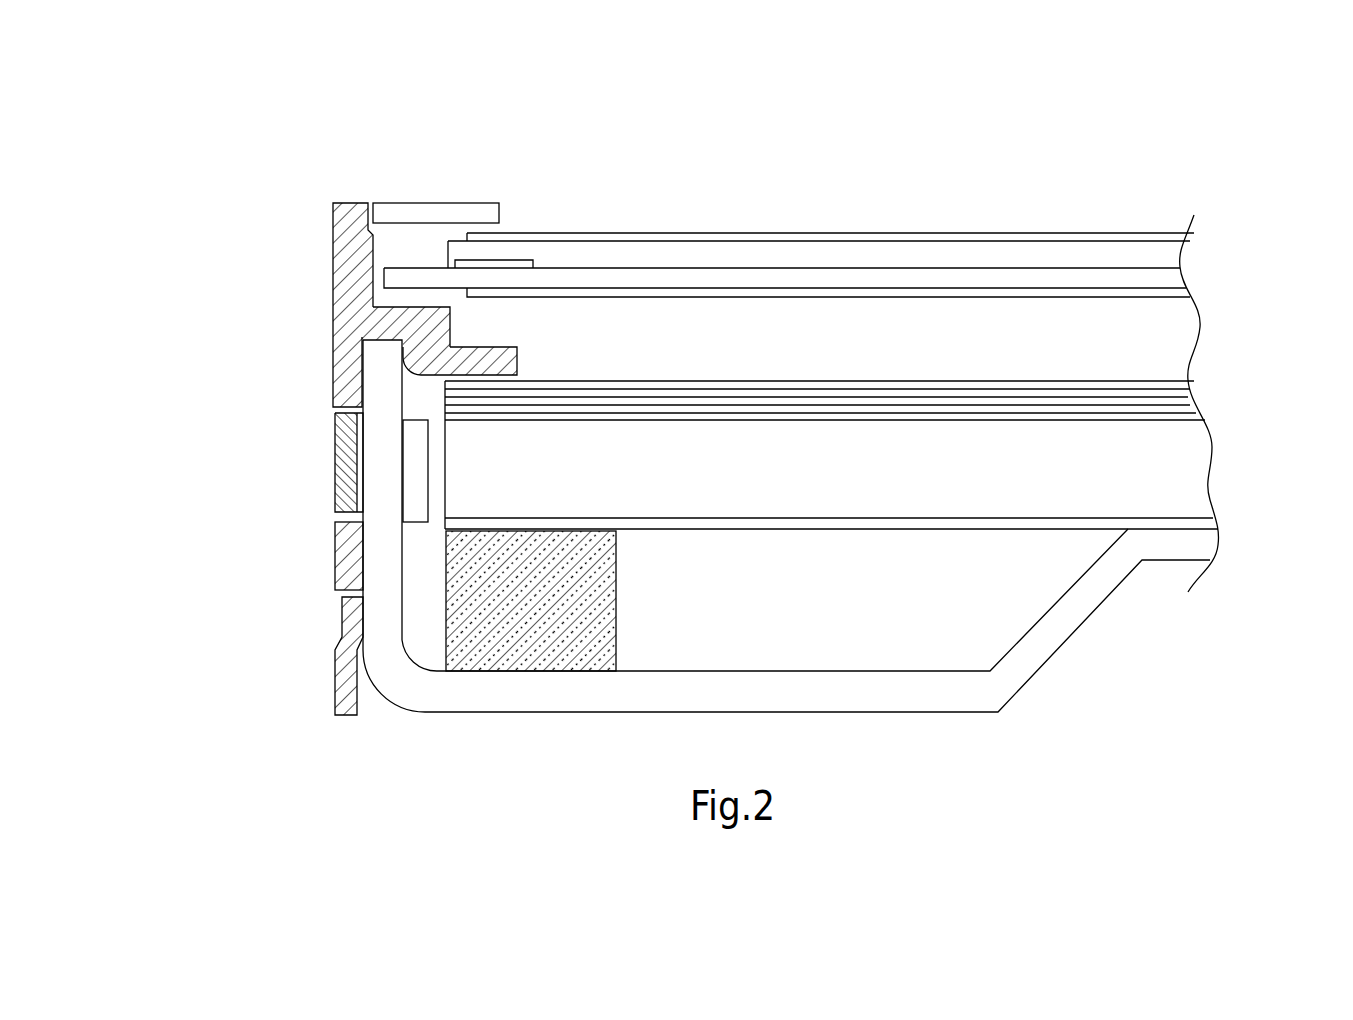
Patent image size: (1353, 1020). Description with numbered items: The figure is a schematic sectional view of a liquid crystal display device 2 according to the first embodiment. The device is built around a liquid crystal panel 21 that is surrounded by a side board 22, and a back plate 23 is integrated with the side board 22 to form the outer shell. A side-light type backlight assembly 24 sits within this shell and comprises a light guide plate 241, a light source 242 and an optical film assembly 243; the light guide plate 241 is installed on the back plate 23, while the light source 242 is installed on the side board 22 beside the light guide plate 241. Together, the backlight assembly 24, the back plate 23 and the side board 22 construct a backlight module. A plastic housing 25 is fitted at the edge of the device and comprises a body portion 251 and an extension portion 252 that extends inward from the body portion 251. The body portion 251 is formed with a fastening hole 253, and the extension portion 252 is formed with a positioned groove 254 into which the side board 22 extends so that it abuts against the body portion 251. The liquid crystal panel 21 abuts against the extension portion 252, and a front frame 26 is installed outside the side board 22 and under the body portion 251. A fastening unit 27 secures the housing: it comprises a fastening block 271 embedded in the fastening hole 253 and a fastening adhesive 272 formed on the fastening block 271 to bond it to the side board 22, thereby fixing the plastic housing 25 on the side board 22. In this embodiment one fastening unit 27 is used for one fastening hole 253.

The liquid crystal display device 2 is at (197, 147).
The liquid crystal panel 21 is at (807, 257).
The side board 22 is at (373, 367).
The back plate 23 is at (921, 700).
The backlight assembly 24 is at (779, 443).
The light guide plate 241 is at (1205, 448).
The light source 242 is at (420, 524).
The optical film assembly 243 is at (1205, 380).
The plastic housing 25 is at (390, 342).
The body portion 251 is at (355, 203).
The extension portion 252 is at (432, 338).
The fastening hole 253 is at (335, 522).
The positioned groove 254 is at (455, 362).
The front frame 26 is at (335, 687).
The fastening unit 27 is at (263, 461).
The fastening block 271 is at (334, 432).
The fastening adhesive 272 is at (334, 480).